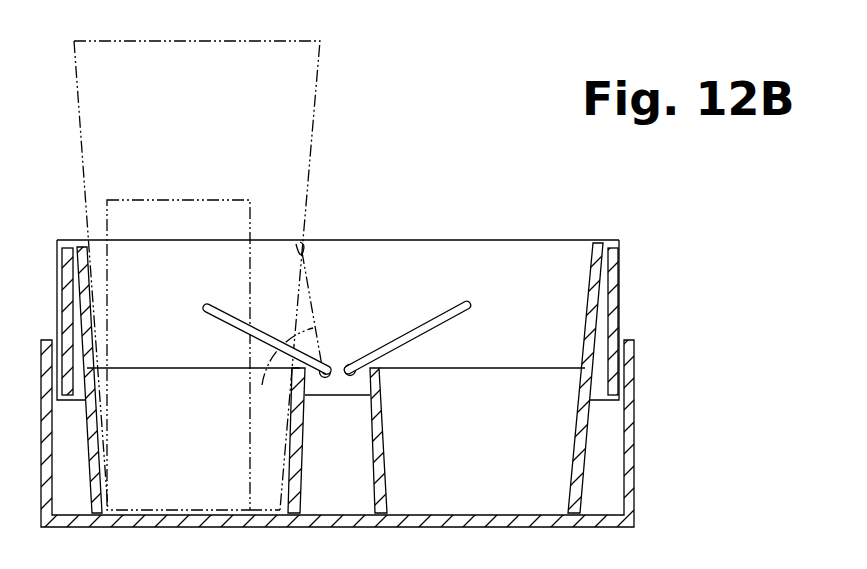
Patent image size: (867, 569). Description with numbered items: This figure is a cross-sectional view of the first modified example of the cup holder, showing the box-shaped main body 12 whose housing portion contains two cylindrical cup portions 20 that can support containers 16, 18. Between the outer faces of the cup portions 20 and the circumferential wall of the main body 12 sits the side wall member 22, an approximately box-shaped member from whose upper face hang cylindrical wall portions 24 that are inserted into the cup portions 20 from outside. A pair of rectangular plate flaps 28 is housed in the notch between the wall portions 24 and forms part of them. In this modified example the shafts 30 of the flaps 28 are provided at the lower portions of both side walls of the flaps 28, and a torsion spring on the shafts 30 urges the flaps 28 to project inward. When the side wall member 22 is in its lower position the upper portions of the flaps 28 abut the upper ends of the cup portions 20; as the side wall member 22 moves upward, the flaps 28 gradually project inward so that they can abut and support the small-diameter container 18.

The main body 12 is at (646, 446).
The container 16 is at (320, 72).
The container 18 is at (238, 212).
The cup portion 20 is at (162, 376).
The side wall member 22 is at (458, 250).
The wall portion 24 is at (84, 268).
The flap 28 is at (262, 340).
The shaft 30 is at (336, 382).